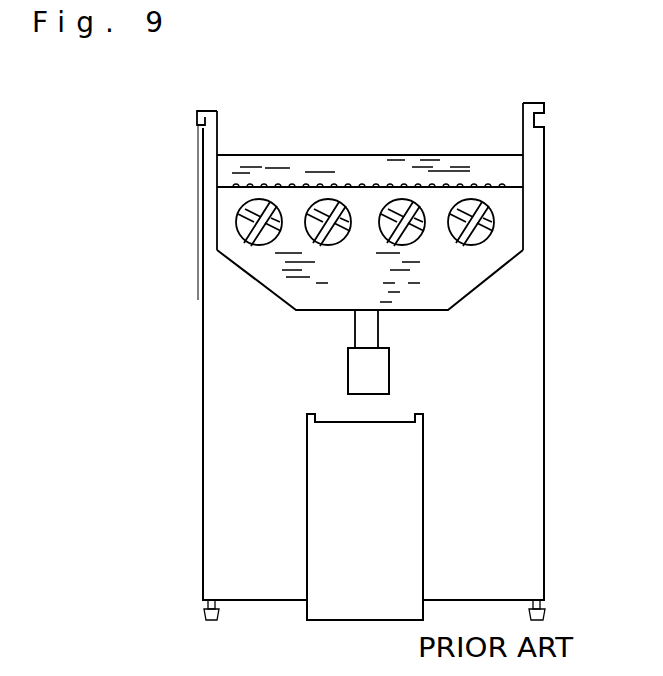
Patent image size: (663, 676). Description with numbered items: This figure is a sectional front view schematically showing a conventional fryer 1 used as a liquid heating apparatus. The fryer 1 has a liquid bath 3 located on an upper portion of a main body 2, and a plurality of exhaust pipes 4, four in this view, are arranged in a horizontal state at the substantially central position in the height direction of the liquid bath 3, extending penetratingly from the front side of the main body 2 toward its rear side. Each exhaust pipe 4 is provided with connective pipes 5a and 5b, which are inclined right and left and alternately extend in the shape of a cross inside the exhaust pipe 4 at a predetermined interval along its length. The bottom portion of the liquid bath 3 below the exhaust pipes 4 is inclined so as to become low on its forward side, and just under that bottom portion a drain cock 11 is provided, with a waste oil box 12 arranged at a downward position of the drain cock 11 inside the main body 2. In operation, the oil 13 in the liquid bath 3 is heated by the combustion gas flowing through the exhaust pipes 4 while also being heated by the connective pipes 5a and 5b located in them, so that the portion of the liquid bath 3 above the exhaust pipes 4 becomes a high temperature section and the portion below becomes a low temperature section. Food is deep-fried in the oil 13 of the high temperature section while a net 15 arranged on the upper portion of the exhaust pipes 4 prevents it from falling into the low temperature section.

The fryer 1 is at (558, 132).
The main body 2 is at (201, 402).
The liquid bath 3 is at (528, 238).
The exhaust pipes 4 is at (237, 232).
The connective pipe 5a is at (330, 203).
The connective pipe 5b is at (318, 203).
The drain cock 11 is at (390, 364).
The waste oil box 12 is at (377, 613).
The oil 13 is at (459, 165).
The net 15 is at (402, 186).